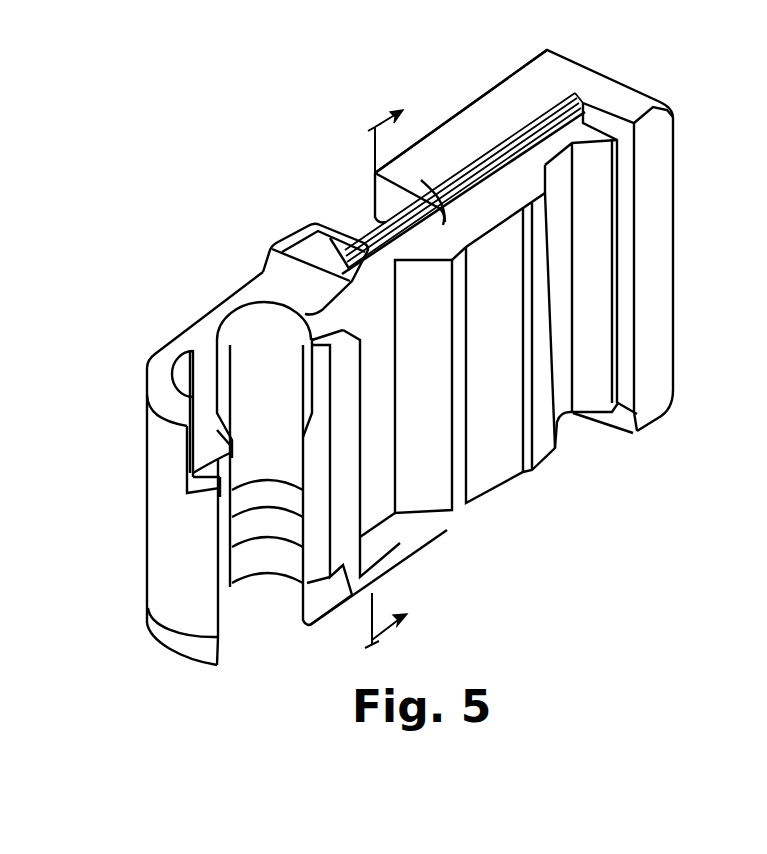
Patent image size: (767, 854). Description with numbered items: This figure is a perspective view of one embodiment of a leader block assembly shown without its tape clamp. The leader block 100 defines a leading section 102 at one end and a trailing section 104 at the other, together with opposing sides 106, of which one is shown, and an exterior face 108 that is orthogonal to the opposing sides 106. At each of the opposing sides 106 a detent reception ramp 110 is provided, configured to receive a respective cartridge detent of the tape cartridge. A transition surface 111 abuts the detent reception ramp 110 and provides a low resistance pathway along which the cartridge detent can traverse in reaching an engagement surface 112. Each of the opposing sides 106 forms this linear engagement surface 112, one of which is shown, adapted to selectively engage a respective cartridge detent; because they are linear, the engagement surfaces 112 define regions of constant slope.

The leader block 100 is at (118, 437).
The leading section 102 is at (170, 550).
The trailing section 104 is at (675, 237).
The opposing sides 106 is at (474, 126).
The exterior face 108 is at (373, 477).
The detent reception ramp 110 is at (378, 238).
The transition surface 111 is at (312, 221).
The engagement surface 112 is at (343, 236).